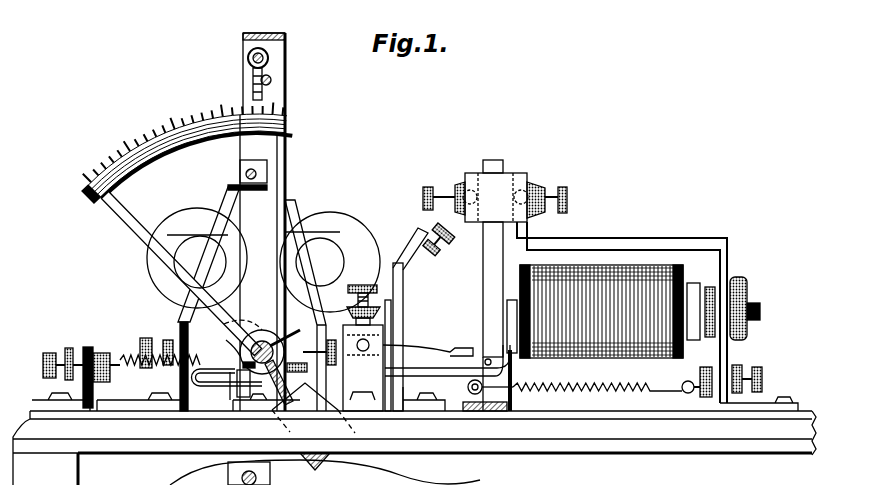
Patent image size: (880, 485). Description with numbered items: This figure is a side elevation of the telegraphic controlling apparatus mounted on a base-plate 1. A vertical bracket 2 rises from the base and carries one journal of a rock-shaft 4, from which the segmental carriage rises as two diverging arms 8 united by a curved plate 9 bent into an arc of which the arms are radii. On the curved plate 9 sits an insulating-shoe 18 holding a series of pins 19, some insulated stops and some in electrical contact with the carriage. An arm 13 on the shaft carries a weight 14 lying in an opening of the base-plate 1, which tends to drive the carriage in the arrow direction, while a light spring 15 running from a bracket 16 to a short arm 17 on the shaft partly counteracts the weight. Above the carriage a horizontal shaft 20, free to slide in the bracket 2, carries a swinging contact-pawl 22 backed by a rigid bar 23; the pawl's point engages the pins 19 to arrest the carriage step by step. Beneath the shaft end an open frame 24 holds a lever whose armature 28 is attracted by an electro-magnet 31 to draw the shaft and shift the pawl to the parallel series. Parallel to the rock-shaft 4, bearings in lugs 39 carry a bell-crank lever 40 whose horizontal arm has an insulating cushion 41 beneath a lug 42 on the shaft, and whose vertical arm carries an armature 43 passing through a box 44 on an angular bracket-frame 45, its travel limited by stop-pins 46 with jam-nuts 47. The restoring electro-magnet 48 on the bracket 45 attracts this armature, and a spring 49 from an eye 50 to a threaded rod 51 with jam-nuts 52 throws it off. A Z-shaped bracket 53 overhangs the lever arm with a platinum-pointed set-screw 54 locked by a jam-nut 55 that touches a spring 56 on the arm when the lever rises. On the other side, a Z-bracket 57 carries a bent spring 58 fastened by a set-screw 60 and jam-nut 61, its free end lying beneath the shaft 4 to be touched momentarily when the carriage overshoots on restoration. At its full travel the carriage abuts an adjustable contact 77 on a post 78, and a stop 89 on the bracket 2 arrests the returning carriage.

The base-plate 1 is at (160, 452).
The vertical bracket 2 is at (253, 222).
The rock-shaft 4 is at (262, 341).
The diverging arms 8 is at (125, 236).
The curved plate 9 is at (183, 143).
The arm 13 is at (284, 402).
The weight 14 is at (313, 426).
The spring 15 is at (140, 353).
The bracket 16 is at (81, 369).
The short arm 17 is at (240, 333).
The insulating-shoe 18 is at (288, 117).
The series of pins 19 is at (86, 190).
The horizontal shaft 20 is at (268, 58).
The contact-pawl 22 is at (252, 75).
The rigid bar 23 is at (272, 80).
The open frame 24 is at (239, 172).
The armature 28 is at (259, 262).
The electro-magnet 31 is at (263, 252).
The brackets or lugs 39 is at (514, 372).
The bell-crank lever 40 is at (447, 360).
The insulating cushion 41 is at (363, 368).
The arm or lug 42 is at (292, 333).
The armature 43 is at (503, 312).
The box or open frame 44 is at (495, 191).
The angular bracket-frame 45 is at (652, 240).
The stop-pins 46 is at (428, 178).
The jam-nuts 47 is at (459, 182).
The electro-magnet 48 is at (617, 320).
The spring 49 is at (606, 394).
The eye 50 is at (478, 386).
The threaded rod 51 is at (757, 370).
The jam-nuts 52 is at (727, 337).
The Z-shaped bracket 53 is at (392, 325).
The set-screw 54 is at (368, 287).
The jam-nut 55 is at (368, 307).
The spring 56 is at (428, 343).
The Z-bracket 57 is at (237, 392).
The spring 58 is at (184, 406).
The set-screw 60 is at (232, 383).
The jam-nut 61 is at (196, 377).
The adjustable contact 77 is at (424, 230).
The post 78 is at (410, 319).
The stop 89 is at (252, 180).